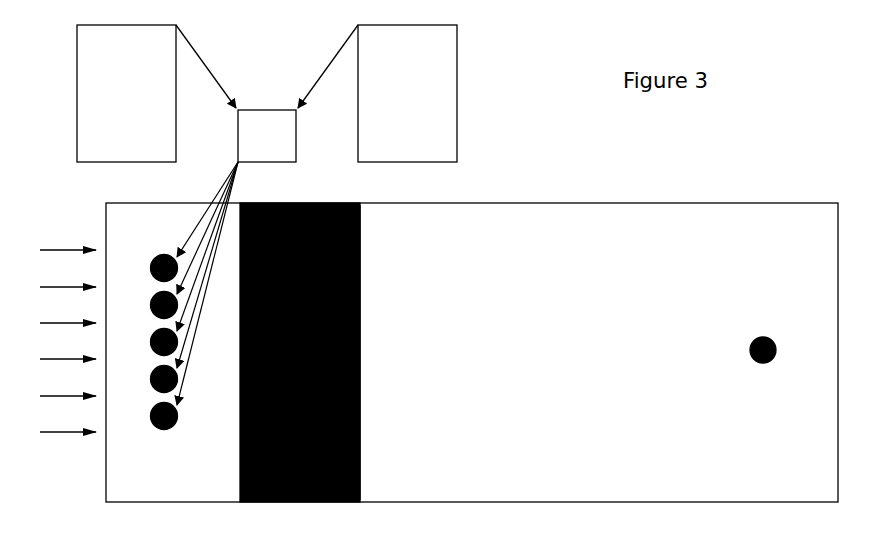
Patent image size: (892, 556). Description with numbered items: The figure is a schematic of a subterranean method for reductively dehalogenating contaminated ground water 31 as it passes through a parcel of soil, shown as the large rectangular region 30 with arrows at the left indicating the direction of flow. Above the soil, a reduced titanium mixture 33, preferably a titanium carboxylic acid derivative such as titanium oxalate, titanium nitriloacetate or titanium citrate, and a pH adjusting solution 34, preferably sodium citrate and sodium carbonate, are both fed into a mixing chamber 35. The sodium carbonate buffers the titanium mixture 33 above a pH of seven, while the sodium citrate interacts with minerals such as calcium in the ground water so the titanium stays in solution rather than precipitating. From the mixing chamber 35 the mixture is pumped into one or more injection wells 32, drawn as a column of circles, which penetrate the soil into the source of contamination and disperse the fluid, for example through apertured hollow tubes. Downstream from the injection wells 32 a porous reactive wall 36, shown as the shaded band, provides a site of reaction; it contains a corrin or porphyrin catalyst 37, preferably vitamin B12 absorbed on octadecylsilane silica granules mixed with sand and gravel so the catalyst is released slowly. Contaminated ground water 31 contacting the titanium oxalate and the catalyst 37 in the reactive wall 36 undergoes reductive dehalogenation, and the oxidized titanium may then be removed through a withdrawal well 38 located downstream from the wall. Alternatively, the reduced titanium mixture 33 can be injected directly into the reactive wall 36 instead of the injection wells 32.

The reactor chamber 30 is at (472, 352).
The contaminated ground water 31 is at (53, 341).
The injection wells 32 is at (168, 435).
The reduced titanium mixture 33 is at (156, 93).
The pH adjusting solution 34 is at (377, 93).
The mixing chamber 35 is at (236, 257).
The porous reactive wall 36 is at (302, 502).
The corrin or porphyrin catalyst 37 is at (360, 350).
The withdrawal well 38 is at (776, 350).